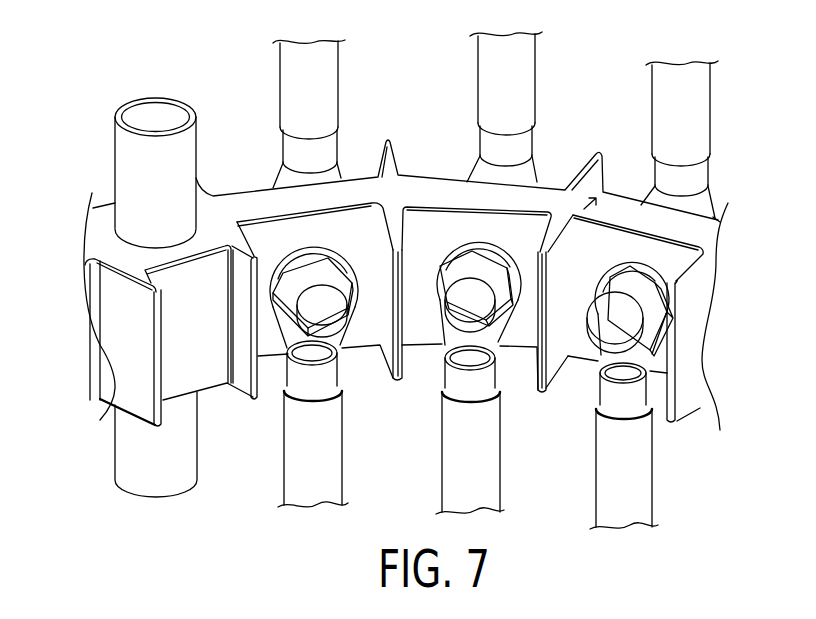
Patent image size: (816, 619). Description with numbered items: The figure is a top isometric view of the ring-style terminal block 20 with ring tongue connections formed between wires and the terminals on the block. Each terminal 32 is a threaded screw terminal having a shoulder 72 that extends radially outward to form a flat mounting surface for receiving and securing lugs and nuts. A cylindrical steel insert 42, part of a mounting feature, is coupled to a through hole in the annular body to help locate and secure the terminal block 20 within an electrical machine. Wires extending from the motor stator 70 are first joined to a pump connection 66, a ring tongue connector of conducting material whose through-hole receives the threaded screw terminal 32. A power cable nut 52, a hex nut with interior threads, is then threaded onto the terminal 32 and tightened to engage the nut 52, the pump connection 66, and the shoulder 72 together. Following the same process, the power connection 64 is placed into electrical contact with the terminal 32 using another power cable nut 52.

The terminal block 20 is at (226, 170).
The cylindrical steel insert 42 is at (137, 165).
The power connection 64 is at (330, 177).
The shoulder 72 is at (307, 250).
The terminal 32 is at (323, 318).
The power cable nut 52 is at (348, 302).
The pump connection 66 is at (323, 387).
The motor stator 70 is at (313, 488).